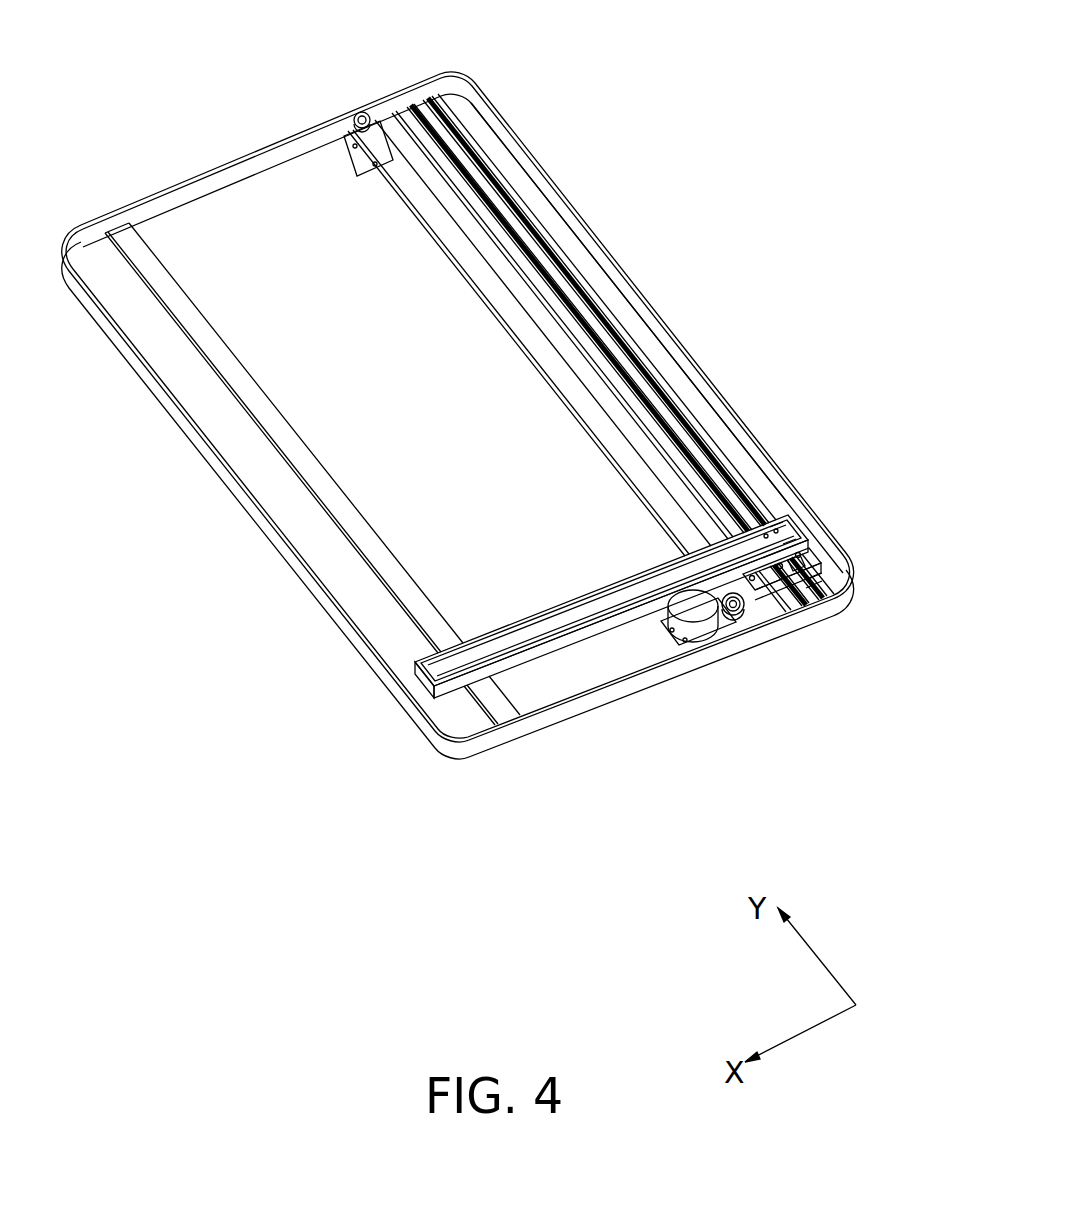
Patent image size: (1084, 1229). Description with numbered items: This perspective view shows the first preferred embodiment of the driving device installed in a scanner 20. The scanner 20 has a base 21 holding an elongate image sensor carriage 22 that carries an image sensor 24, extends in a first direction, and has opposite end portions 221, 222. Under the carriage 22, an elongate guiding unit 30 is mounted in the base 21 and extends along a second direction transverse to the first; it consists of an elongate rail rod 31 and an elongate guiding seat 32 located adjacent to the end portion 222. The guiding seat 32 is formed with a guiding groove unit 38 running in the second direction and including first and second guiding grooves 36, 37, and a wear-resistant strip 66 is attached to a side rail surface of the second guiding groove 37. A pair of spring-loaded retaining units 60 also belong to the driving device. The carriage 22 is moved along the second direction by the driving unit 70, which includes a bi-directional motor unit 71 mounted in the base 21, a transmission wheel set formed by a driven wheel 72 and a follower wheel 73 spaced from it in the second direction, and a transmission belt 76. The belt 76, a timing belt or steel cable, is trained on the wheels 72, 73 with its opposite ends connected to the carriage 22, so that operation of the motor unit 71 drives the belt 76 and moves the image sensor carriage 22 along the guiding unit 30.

The scanner 20 is at (177, 427).
The base 21 is at (222, 473).
The image sensor carriage 22 is at (586, 630).
The end portion 221 is at (437, 688).
The end portion 222 is at (790, 520).
The image sensor 24 is at (537, 640).
The guiding unit 30 is at (448, 404).
The rail rod 31 is at (321, 462).
The guiding seat 32 is at (553, 331).
The first guiding groove 36 is at (792, 597).
The second guiding groove 37 is at (818, 590).
The guiding groove unit 38 is at (846, 627).
The spring-loaded retaining units 60 is at (826, 609).
The wear-resistant strip 66 is at (652, 380).
The driving unit 70 is at (716, 650).
The bi-directional motor unit 71 is at (695, 625).
The driven wheel 72 is at (736, 618).
The follower wheel 73 is at (360, 112).
The transmission belt 76 is at (430, 237).